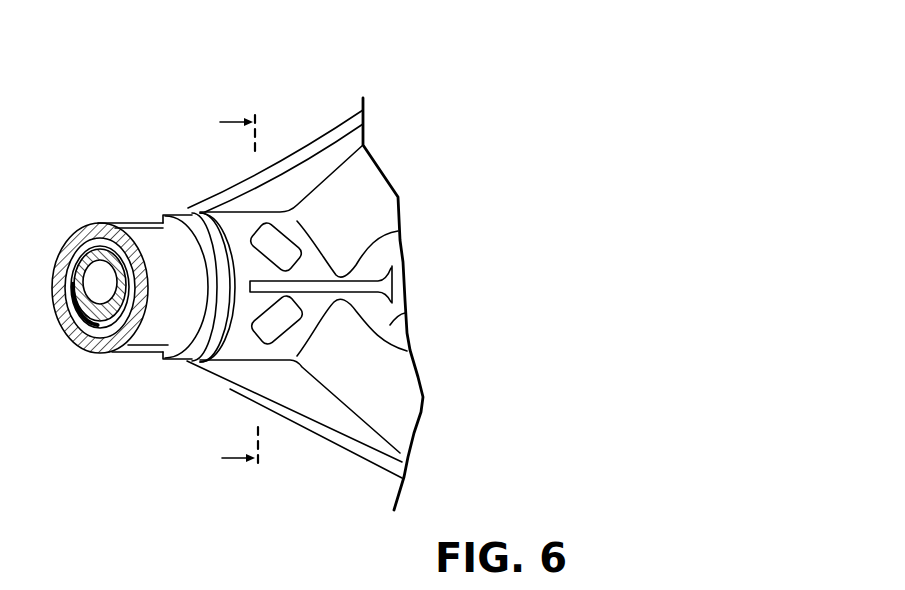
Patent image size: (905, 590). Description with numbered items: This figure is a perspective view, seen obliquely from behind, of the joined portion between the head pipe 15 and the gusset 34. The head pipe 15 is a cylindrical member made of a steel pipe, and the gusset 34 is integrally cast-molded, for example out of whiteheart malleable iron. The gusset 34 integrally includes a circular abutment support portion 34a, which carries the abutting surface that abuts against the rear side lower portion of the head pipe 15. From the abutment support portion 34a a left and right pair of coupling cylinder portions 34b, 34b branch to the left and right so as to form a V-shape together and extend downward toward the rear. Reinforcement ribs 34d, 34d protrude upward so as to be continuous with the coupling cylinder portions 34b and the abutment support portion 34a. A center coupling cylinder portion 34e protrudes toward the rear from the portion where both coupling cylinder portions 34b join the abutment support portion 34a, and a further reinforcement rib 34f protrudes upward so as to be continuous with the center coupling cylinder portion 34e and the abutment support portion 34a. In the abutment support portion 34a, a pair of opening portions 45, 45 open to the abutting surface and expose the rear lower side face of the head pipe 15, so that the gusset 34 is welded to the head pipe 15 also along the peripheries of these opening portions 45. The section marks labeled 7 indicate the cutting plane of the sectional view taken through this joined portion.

The head pipe 15 is at (68, 240).
The gusset 34 is at (305, 126).
The abutment support portion 34a is at (230, 345).
The coupling cylinder portions 34b is at (368, 187).
The reinforcement ribs 34d is at (332, 125).
The center coupling cylinder portion 34e is at (404, 317).
The reinforcement rib 34f is at (360, 280).
The opening portions 45 is at (278, 232).
The section line 7- 7 is at (239, 291).